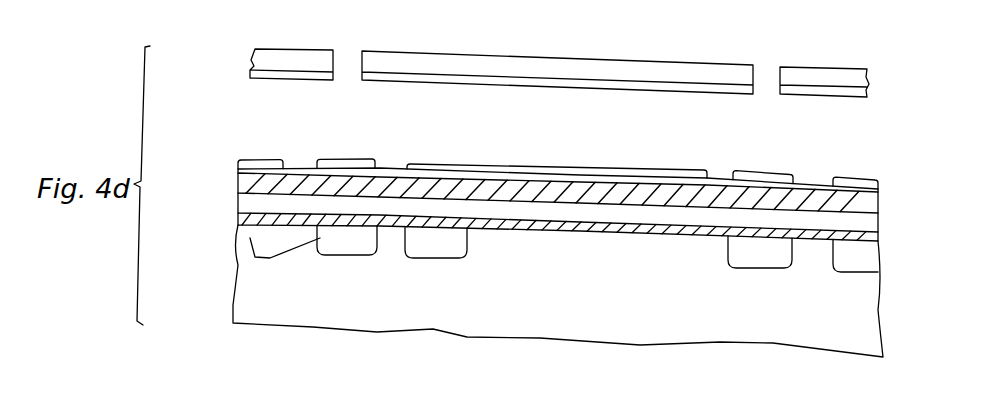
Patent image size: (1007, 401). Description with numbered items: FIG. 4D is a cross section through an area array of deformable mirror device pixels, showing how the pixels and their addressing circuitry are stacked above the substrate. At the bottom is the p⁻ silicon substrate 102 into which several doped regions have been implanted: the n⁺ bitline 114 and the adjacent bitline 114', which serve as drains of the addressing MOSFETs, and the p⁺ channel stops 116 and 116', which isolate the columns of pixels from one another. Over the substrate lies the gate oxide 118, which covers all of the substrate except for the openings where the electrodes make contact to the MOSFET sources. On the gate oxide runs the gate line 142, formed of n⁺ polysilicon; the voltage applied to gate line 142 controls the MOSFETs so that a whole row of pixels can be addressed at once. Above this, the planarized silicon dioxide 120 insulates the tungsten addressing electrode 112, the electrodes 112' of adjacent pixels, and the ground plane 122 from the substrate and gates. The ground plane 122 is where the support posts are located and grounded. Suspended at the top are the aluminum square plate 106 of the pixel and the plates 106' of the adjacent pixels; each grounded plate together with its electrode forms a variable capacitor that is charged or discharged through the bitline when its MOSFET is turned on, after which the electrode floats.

The p⁻ silicon substrate 102 is at (600, 305).
The aluminum square plate 106 is at (557, 52).
The adjacent plates 106' is at (574, 52).
The tungsten addressing electrode 112 is at (558, 161).
The electrodes for adjacent plates 112' is at (552, 159).
The n⁺ diffused bitline 114 is at (429, 299).
The adjacent bitline 114' is at (890, 282).
The p⁺ diffused channel stop 116 is at (277, 246).
The adjacent channel stop 116' is at (760, 310).
The gate oxide layer 118 is at (880, 240).
The silicon dioxide layer 120 is at (520, 205).
The ground plane 122 is at (370, 161).
The gate line 142 is at (880, 220).